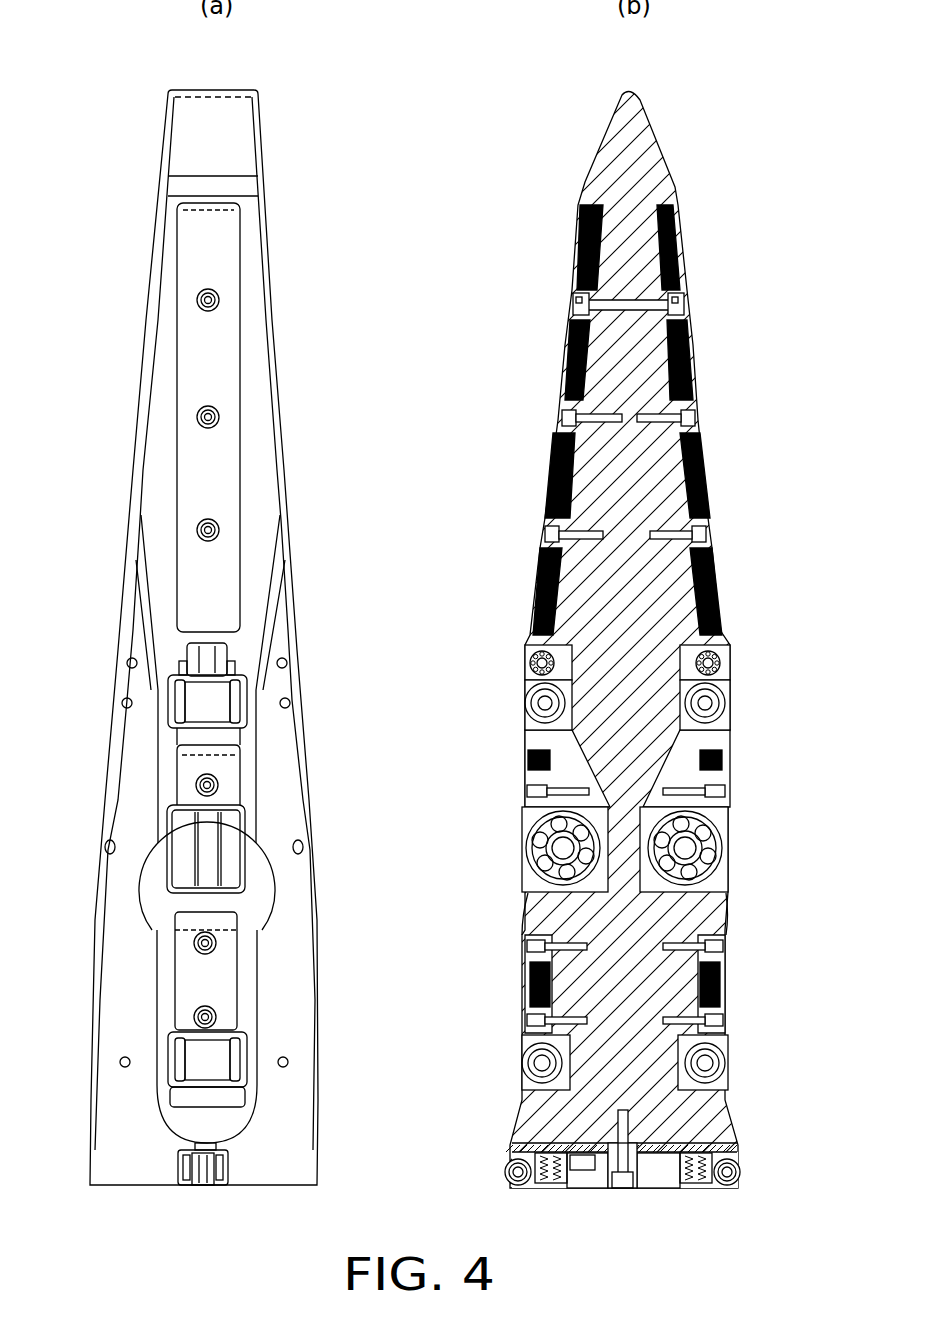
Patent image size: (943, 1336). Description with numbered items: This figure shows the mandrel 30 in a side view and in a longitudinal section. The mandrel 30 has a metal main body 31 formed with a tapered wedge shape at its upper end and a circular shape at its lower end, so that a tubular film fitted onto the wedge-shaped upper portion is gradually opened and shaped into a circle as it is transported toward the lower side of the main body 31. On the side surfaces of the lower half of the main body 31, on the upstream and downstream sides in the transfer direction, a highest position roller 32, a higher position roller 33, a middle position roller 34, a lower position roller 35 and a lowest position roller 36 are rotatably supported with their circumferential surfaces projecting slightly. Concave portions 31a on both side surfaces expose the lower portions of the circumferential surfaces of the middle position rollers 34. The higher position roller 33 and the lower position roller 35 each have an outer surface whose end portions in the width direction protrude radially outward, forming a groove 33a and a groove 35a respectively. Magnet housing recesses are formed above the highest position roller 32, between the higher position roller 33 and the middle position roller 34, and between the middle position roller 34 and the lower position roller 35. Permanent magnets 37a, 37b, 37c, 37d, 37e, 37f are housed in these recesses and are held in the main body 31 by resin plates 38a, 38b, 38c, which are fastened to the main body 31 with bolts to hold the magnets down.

The mandrel 30 is at (180, 78).
The main body 31 is at (122, 800).
The concave portion 31a is at (262, 880).
The highest position roller 32 is at (205, 662).
The higher position roller 33 is at (172, 697).
The groove 33a is at (222, 693).
The middle position roller 34 is at (228, 834).
The lower position roller 35 is at (172, 1052).
The groove 35a is at (215, 1064).
The lowest position roller 36 is at (205, 1186).
The permanent magnet 37a is at (578, 258).
The permanent magnet 37b is at (570, 355).
The permanent magnet 37c is at (548, 480).
The permanent magnet 37d is at (540, 585).
The permanent magnet 37e is at (530, 752).
The permanent magnet 37f is at (533, 948).
The resin plate 38a is at (226, 244).
The resin plate 38b is at (222, 770).
The resin plate 38c is at (218, 980).